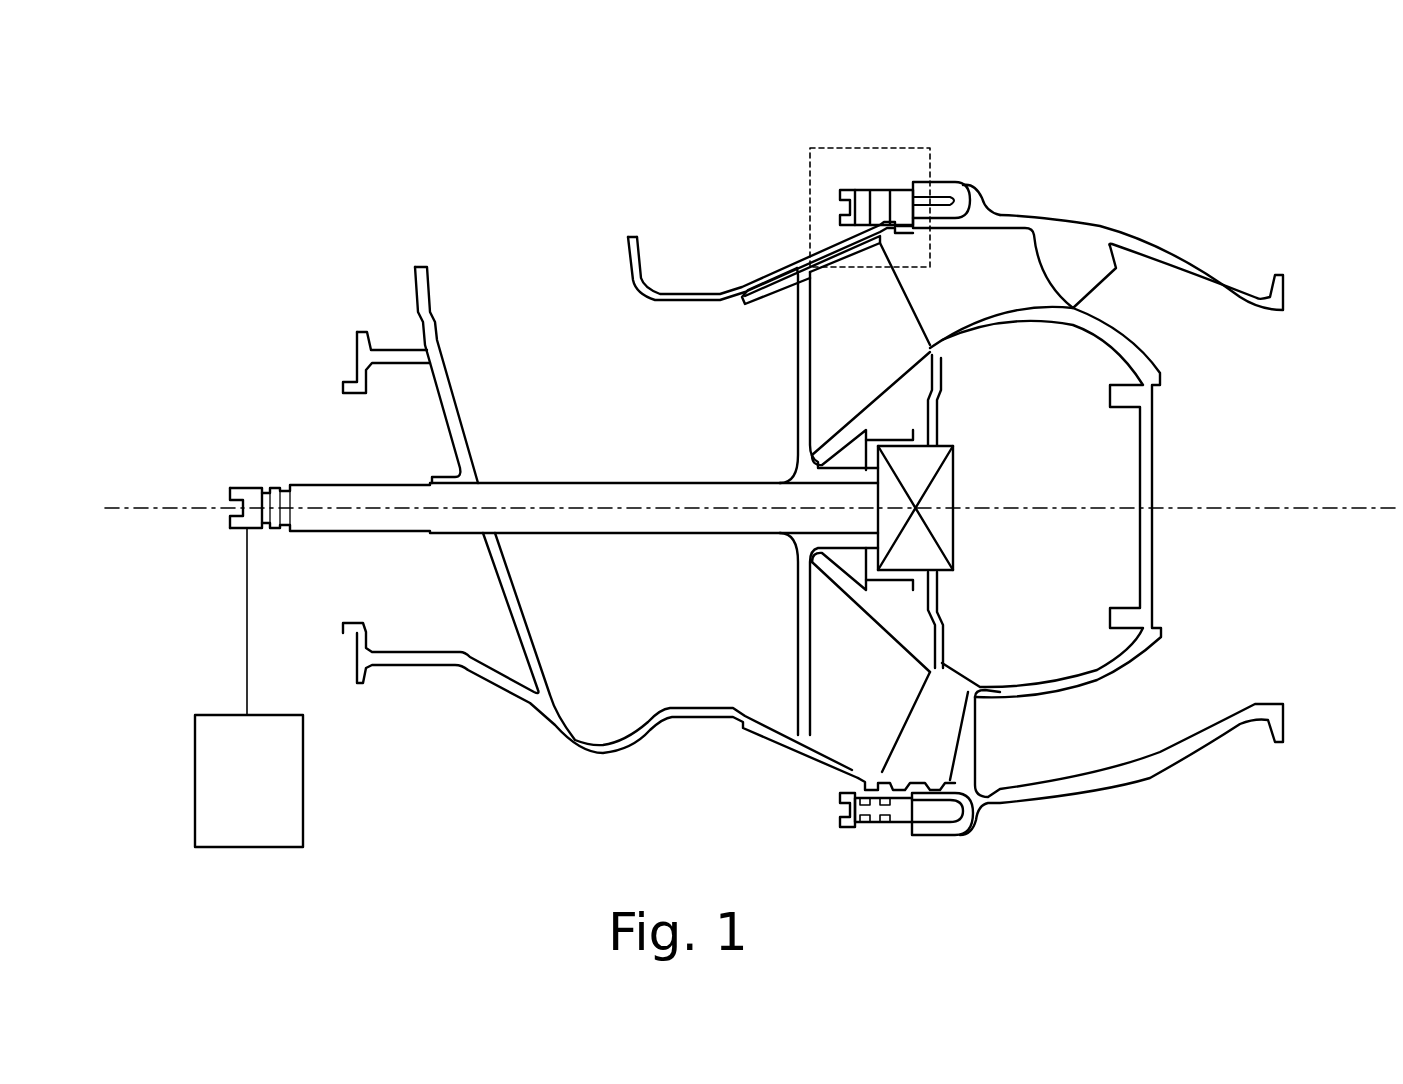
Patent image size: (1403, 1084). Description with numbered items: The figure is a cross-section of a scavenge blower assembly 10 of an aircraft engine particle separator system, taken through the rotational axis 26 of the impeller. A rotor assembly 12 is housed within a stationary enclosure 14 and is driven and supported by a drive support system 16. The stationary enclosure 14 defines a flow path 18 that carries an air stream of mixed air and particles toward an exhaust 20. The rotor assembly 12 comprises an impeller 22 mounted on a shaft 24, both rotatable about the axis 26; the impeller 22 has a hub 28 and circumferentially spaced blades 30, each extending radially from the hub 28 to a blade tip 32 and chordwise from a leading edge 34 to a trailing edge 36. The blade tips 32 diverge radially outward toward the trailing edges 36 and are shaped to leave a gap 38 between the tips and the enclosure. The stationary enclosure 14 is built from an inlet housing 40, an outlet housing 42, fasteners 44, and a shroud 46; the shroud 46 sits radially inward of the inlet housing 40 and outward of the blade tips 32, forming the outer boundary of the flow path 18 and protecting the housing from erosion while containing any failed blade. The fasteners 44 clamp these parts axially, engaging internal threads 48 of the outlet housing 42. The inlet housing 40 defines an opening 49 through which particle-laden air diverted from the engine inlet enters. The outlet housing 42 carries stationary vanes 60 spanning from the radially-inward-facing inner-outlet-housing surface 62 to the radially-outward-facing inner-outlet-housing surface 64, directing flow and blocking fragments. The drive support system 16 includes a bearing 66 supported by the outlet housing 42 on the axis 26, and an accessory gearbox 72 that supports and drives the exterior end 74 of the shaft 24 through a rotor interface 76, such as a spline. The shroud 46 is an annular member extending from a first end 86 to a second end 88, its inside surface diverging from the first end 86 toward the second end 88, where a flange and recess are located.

The scavenge blower assembly 10 is at (1208, 137).
The rotor assembly 12 is at (650, 436).
The stationary enclosure 14 is at (702, 207).
The drive support system 16 is at (202, 624).
The flow path 18 is at (562, 398).
The exhaust 20 is at (1278, 406).
The impeller 22 is at (783, 390).
The shaft 24 is at (665, 538).
The axis 26 is at (1296, 502).
The hub 28 is at (840, 432).
The blades 30 is at (901, 516).
The blade tips 32 is at (803, 276).
The leading edge 34 is at (797, 338).
The trailing edge 36 is at (910, 305).
The gap 38 is at (782, 290).
The inlet housing 40 is at (600, 760).
The outlet housing 42 is at (1060, 797).
The fasteners 44 is at (856, 828).
The shroud 46 is at (782, 266).
The internal threads 48 is at (965, 184).
The opening 49 is at (500, 276).
The stationary vanes 60 is at (1106, 262).
The radially-inward-facing inner-outlet-housing surface 62 is at (1190, 276).
The radially-outward-facing inner-outlet-housing surface 64 is at (1130, 345).
The bearing 66 is at (957, 468).
The accessory gearbox 72 is at (249, 687).
The exterior end 74 is at (212, 482).
The rotor interface 76 is at (272, 484).
The first end 86 is at (737, 268).
The second end 88 is at (880, 172).